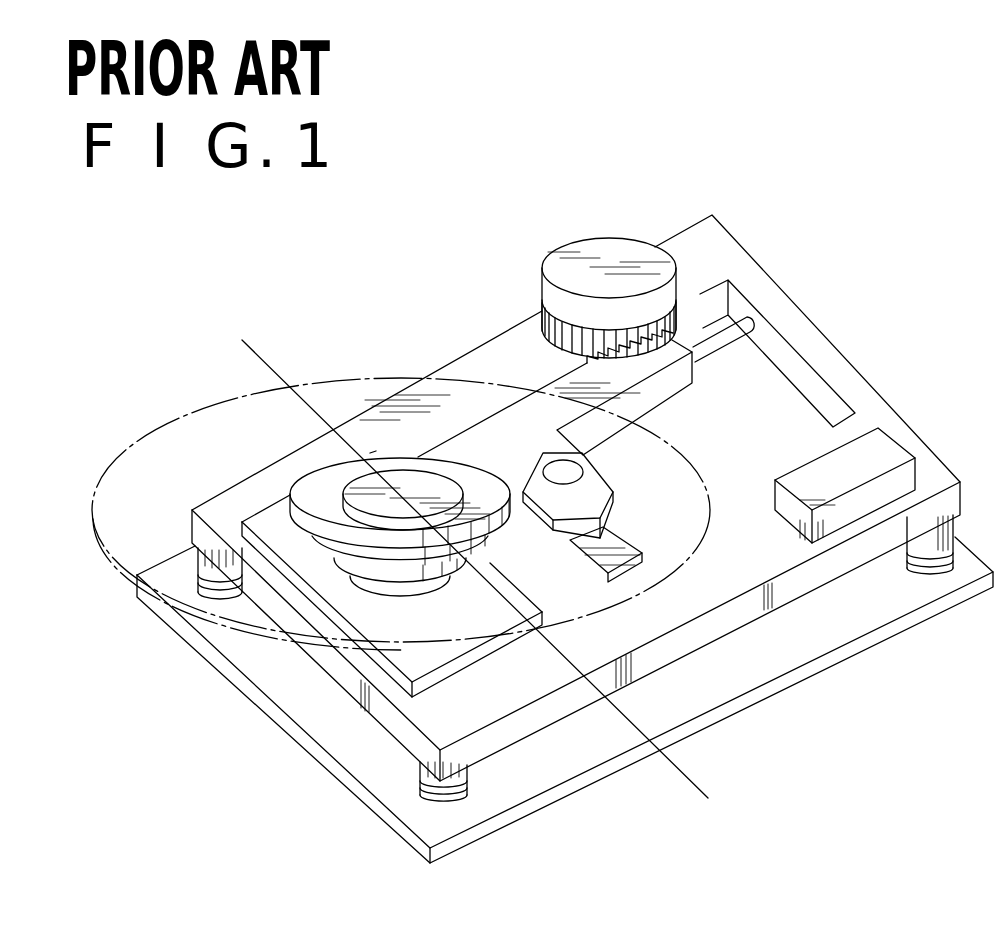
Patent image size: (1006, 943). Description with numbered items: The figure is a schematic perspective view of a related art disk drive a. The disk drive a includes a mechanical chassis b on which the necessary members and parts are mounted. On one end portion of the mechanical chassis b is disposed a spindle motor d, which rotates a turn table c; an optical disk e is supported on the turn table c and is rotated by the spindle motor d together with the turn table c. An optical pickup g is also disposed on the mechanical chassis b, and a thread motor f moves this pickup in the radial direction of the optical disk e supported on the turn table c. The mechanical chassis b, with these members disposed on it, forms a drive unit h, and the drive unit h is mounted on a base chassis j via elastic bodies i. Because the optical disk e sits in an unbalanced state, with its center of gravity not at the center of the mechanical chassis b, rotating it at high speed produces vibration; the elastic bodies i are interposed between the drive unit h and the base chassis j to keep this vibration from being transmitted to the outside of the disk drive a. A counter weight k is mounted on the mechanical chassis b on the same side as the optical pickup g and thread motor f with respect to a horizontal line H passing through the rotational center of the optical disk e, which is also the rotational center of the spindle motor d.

The disk drive a is at (430, 300).
The mechanical chassis b is at (810, 318).
The turn table c is at (327, 482).
The spindle motor d is at (350, 580).
The optical disk e is at (213, 400).
The thread motor f is at (598, 247).
The optical pickup g is at (600, 460).
The drive unit h is at (712, 597).
The elastic bodies i is at (197, 563).
The base chassis j is at (598, 748).
The counter weight k is at (900, 440).
The horizontal line H- H is at (478, 569).